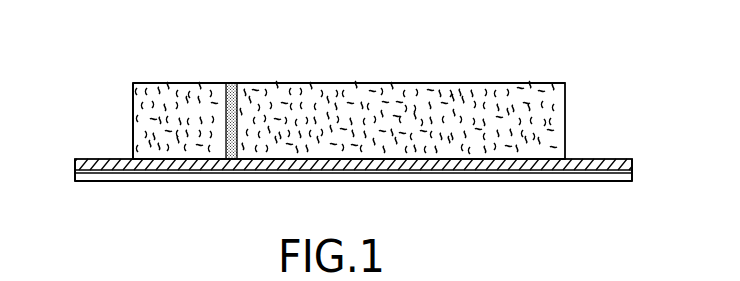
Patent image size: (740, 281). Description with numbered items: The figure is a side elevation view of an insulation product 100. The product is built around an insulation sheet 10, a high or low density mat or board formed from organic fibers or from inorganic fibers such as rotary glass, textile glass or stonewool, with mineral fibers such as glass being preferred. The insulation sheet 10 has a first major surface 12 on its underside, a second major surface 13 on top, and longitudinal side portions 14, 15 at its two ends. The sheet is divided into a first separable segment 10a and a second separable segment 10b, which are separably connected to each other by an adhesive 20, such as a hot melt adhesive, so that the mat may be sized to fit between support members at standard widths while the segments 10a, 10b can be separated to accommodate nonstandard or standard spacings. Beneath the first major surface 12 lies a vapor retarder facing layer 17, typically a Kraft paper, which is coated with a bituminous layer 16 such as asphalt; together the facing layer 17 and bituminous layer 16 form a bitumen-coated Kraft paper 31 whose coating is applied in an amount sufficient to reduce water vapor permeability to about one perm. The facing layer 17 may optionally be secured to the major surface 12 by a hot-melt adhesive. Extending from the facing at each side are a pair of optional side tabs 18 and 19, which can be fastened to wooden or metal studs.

The insulation product 100 is at (692, 75).
The insulation sheet 10 is at (565, 112).
The first separable segment 10a is at (450, 88).
The second separable segment 10b is at (189, 86).
The second major surface 13 is at (332, 82).
The longitudinal side portion 14 is at (559, 130).
The longitudinal side portion 15 is at (133, 122).
The adhesive 20 is at (232, 84).
The bitumen-coated Kraft paper 31 is at (366, 189).
The bituminous layer 16 is at (320, 170).
The first major surface 12 is at (187, 172).
The vapor retarder facing layer 17 is at (412, 181).
The side tab 18 is at (90, 183).
The side tab 19 is at (597, 181).